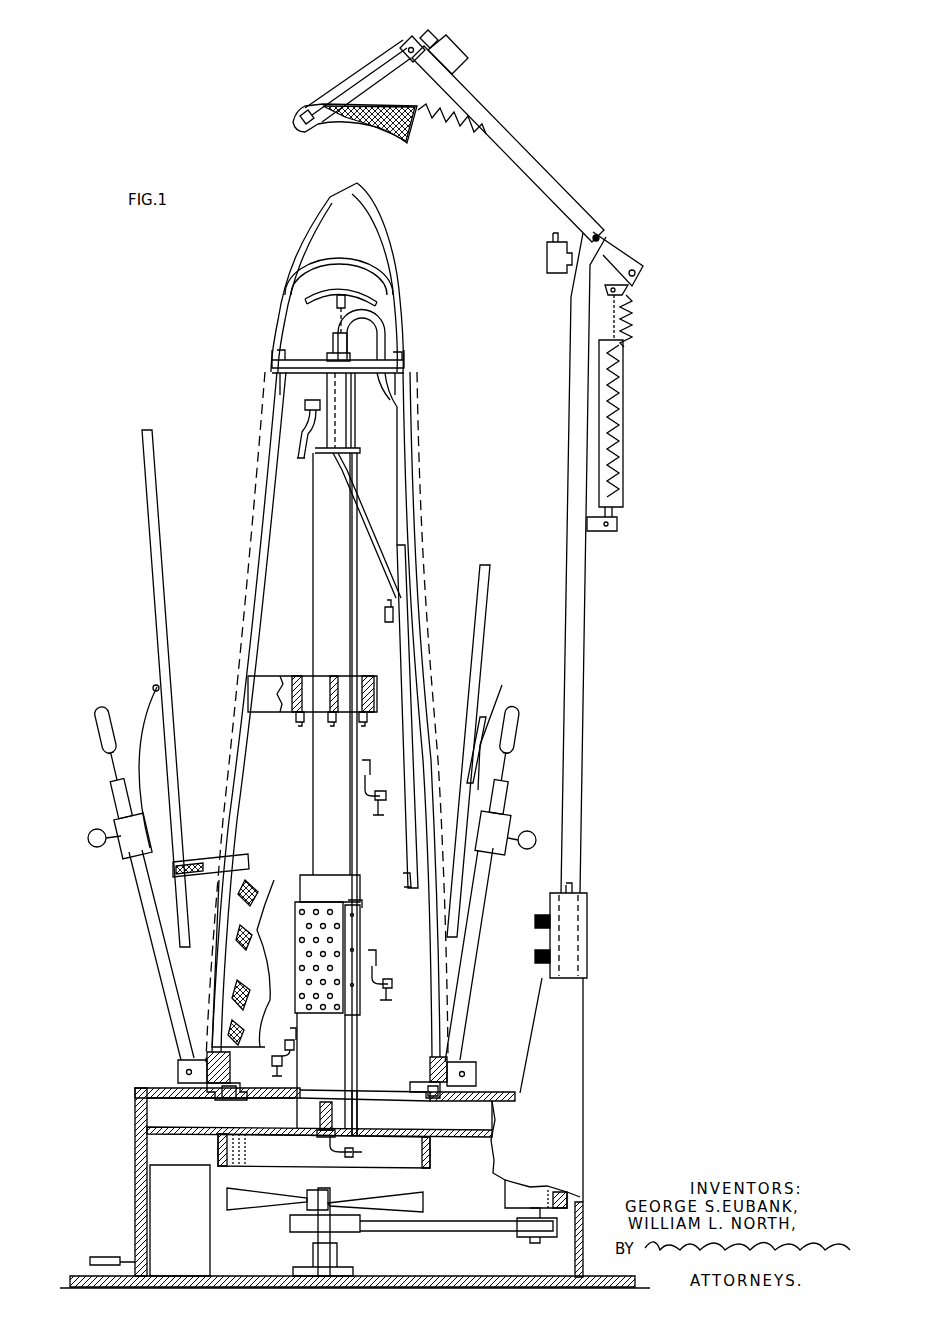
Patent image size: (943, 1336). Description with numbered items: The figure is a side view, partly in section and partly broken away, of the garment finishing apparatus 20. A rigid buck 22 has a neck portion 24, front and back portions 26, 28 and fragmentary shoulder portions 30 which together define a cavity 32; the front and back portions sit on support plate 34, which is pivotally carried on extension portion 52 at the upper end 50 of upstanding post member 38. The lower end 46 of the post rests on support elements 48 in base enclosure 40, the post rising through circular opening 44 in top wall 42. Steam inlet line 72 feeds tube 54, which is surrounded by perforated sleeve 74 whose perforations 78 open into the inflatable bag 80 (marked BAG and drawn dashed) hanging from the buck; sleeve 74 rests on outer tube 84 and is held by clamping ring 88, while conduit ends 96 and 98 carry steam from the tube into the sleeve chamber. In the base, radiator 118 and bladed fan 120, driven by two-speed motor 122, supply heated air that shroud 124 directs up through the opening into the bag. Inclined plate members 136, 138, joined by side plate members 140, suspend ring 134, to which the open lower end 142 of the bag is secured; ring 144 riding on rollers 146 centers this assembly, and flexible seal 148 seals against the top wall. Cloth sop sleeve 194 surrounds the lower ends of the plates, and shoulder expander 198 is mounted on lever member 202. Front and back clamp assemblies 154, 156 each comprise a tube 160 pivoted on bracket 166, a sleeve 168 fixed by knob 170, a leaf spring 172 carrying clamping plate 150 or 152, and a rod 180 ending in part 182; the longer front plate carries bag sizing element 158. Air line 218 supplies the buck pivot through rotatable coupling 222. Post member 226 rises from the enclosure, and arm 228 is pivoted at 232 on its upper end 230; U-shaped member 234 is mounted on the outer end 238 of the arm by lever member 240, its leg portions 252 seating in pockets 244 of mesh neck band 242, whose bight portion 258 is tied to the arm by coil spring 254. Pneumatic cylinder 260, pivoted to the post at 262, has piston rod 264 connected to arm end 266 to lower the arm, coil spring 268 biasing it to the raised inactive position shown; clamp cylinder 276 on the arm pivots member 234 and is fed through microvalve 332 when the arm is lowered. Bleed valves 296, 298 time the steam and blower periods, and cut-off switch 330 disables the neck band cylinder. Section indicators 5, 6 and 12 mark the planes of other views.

The apparatus 20 is at (113, 295).
The rigid buck 22 is at (336, 278).
The neck portion 24 is at (352, 192).
The front portion 26 is at (278, 302).
The back portion 28 is at (405, 296).
The fragmentary shoulder portions 30 is at (340, 260).
The cavity 32 is at (322, 314).
The support plate 34 is at (305, 373).
The upstanding post member 38 is at (305, 590).
The base enclosure 40 is at (355, 1179).
The top wall 42 is at (147, 1090).
The circular opening 44 is at (372, 1090).
The lower end of post 46 is at (358, 1117).
The support elements 48 is at (320, 1115).
The upper end of post member 50 is at (318, 462).
The extension portion 52 is at (356, 430).
The tube 54 is at (313, 632).
The steam inlet line 72 is at (372, 778).
The sleeve 74 is at (362, 996).
The perforations 78 is at (360, 908).
The inflatable bag 80 is at (425, 545).
The outer tube 84 is at (362, 1036).
The clamping ring 88 is at (355, 885).
The end of steam conduit 96 is at (287, 1044).
The end of steam conduit 98 is at (392, 984).
The radiator 118 is at (217, 1248).
The bladed fan 120 is at (270, 1205).
The two-speed motor 122 is at (522, 1195).
The shroud 124 is at (430, 1160).
The ring 134 is at (430, 1070).
The plate member 136 is at (248, 776).
The plate member 138 is at (398, 493).
The side plate members 140 is at (268, 676).
The lower open end of bag 142 is at (448, 1052).
The ring 144 is at (292, 712).
The rollers 146 is at (318, 676).
The flexible annular seal member 148 is at (428, 1098).
The front movable clamping plate 150 is at (158, 470).
The rear movable clamping plate 152 is at (486, 604).
The front clamp assembly 154 is at (268, 874).
The back clamp assembly 156 is at (512, 892).
The bag sizing element 158 is at (200, 858).
The elongated tube 160 is at (150, 950).
The bracket 166 is at (176, 1068).
The sleeve 168 is at (122, 848).
The hand-actuated knob 170 is at (86, 838).
The leaf spring 172 is at (139, 720).
The rod 180 is at (108, 772).
The handle 182 is at (96, 706).
The cloth sop sleeve 194 is at (258, 930).
The shoulder expander 198 is at (372, 292).
The lever member 202 is at (398, 650).
The air line 218 is at (300, 438).
The rotatable coupling 222 is at (333, 341).
The post member 226 is at (586, 672).
The arm 228 is at (552, 186).
The upper end of post 230 is at (576, 272).
The pivot 232 is at (602, 238).
The U-shaped member 234 is at (380, 62).
The outer end of arm 238 is at (410, 45).
The lever member 240 is at (436, 40).
The neck band 242 is at (365, 135).
The pockets 244 is at (302, 116).
The leg portions 252 is at (368, 78).
The coil spring 254 is at (468, 134).
The bight portion 258 is at (402, 130).
The pneumatic cylinder 260 is at (624, 462).
The pivot 262 is at (608, 532).
The piston rod 264 is at (622, 336).
The end of arm 266 is at (640, 265).
The coil spring 268 is at (634, 316).
The pneumatic cylinder 276 is at (463, 60).
The bleed valve 296 is at (530, 921).
The bleed valve 298 is at (534, 958).
The neck band cylinder cut-off switch 330 is at (574, 888).
The microvalve 332 is at (547, 258).
The section line 5 is at (347, 148).
The section line 6 is at (207, 662).
The section line 12 is at (168, 854).
The inflatable bag BAG is at (420, 448).